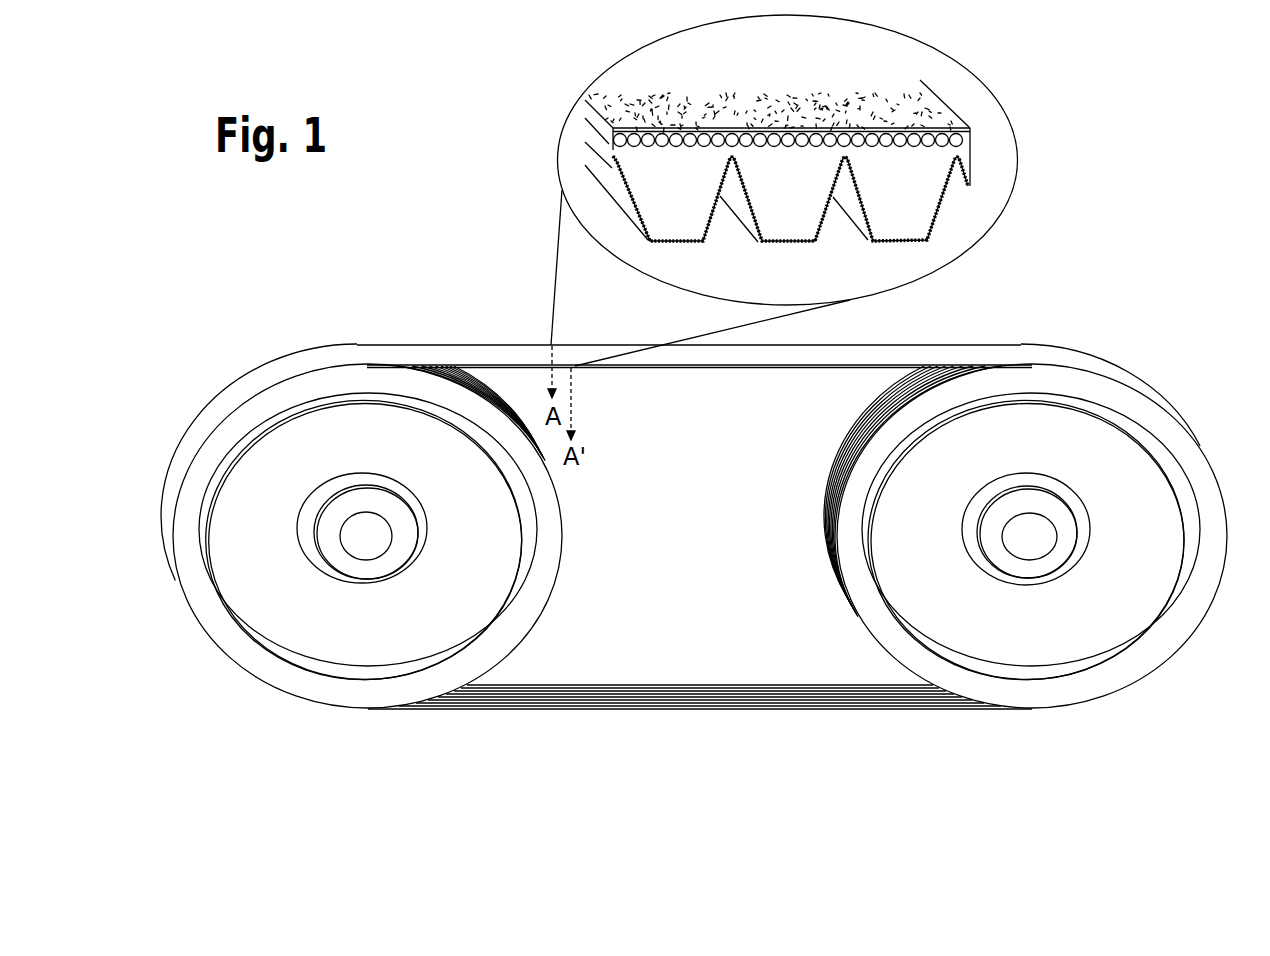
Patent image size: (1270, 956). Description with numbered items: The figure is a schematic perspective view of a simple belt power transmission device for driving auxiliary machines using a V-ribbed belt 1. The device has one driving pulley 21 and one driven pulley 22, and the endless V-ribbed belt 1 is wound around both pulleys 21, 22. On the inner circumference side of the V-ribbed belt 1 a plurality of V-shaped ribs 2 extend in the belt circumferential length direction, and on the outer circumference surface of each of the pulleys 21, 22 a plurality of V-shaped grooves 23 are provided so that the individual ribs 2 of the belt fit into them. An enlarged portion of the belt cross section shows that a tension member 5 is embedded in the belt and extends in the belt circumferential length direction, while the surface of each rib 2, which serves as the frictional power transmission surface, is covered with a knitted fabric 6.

The V-ribbed belt 1 is at (492, 317).
The V-shaped rib 2 is at (777, 233).
The tension member 5 is at (857, 134).
The knitted fabric 6 is at (828, 225).
The driving pulley 21 is at (567, 540).
The driven pulley 22 is at (823, 550).
The V-shaped groove 23 is at (462, 366).